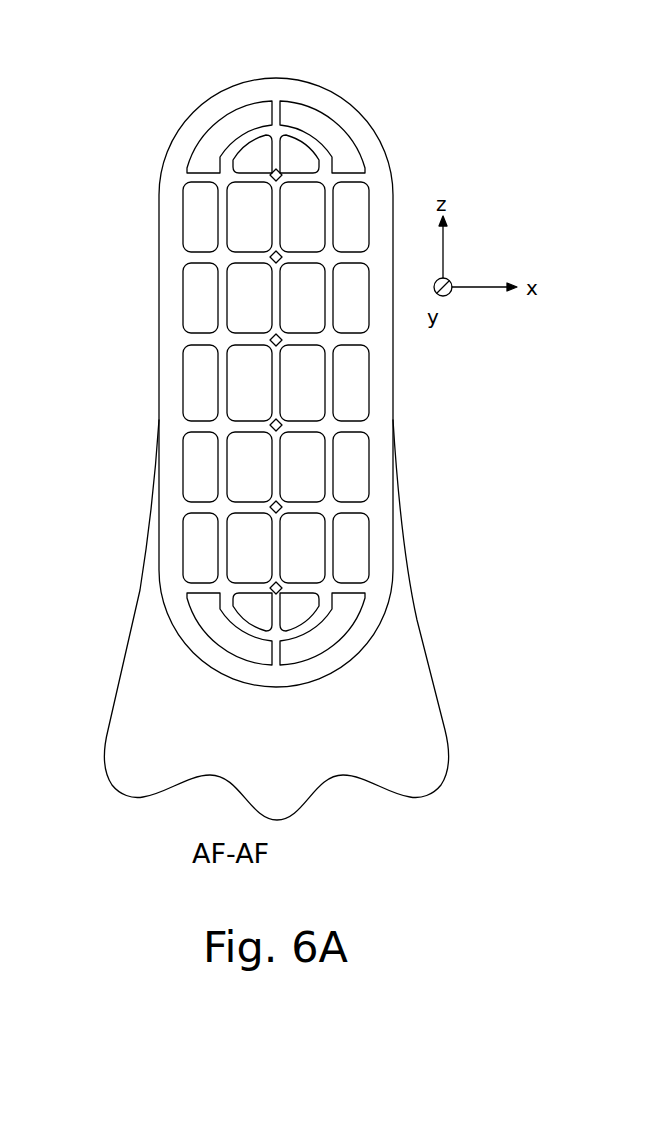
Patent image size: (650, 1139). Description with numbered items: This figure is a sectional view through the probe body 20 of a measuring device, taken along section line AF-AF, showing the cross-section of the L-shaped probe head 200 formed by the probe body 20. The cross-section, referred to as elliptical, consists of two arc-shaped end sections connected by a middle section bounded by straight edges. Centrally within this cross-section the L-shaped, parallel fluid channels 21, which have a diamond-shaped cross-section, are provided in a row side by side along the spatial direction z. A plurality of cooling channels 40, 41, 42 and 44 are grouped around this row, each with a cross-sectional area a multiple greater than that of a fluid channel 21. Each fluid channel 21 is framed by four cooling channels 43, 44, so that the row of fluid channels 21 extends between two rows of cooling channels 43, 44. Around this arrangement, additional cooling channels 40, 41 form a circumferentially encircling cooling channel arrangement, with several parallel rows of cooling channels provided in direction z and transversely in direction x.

The probe body 20 is at (425, 655).
The probe head 200 is at (217, 92).
The fluid channel 21 is at (277, 166).
The cooling channel 40 is at (197, 230).
The cooling channel 41 is at (240, 113).
The cooling channel 42 is at (238, 642).
The cooling channel 43 is at (257, 157).
The cooling channel 44 is at (305, 200).